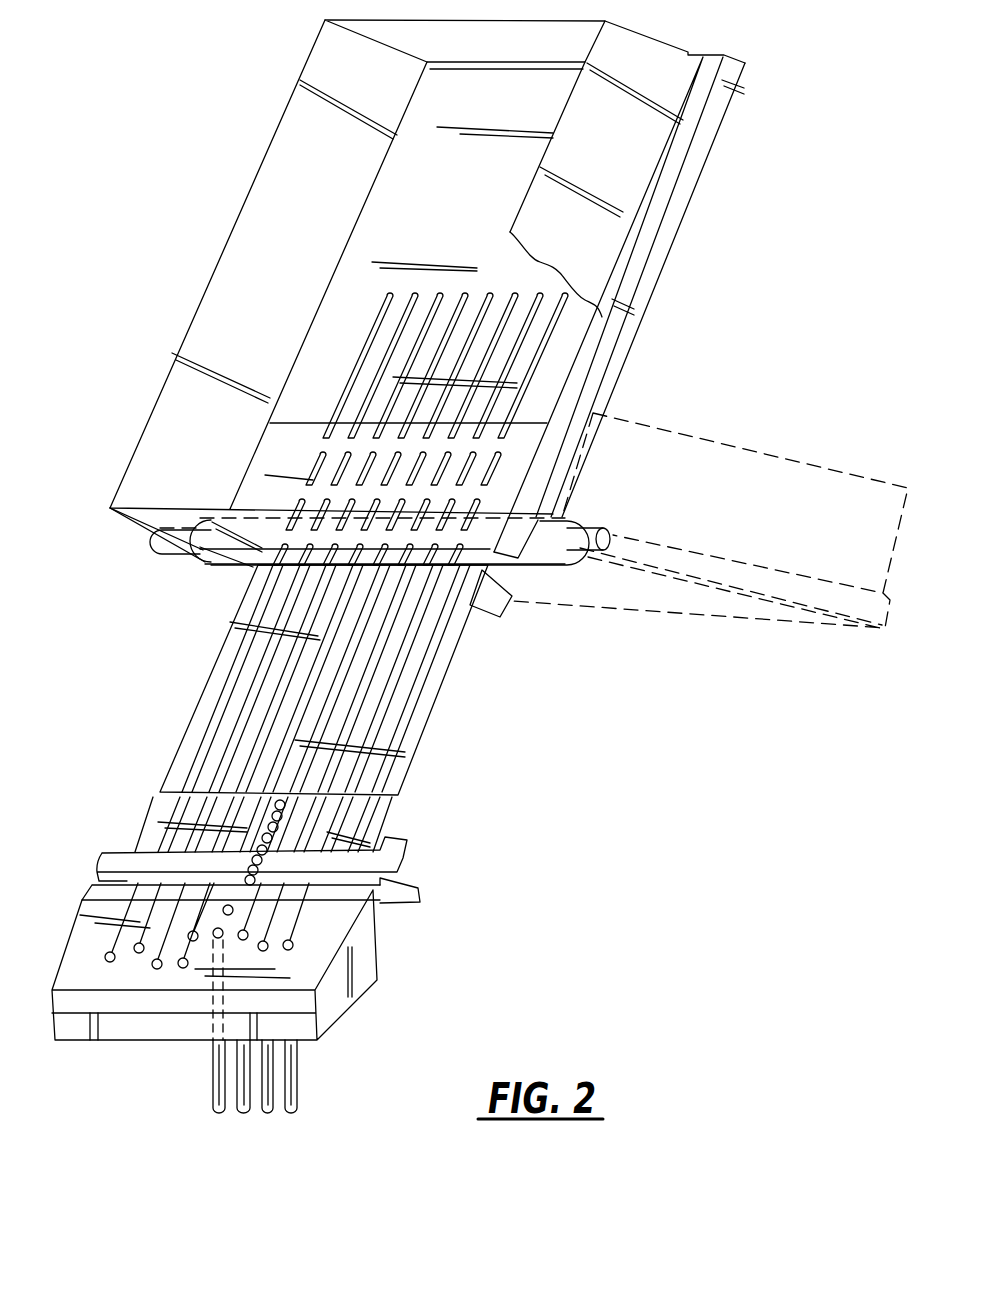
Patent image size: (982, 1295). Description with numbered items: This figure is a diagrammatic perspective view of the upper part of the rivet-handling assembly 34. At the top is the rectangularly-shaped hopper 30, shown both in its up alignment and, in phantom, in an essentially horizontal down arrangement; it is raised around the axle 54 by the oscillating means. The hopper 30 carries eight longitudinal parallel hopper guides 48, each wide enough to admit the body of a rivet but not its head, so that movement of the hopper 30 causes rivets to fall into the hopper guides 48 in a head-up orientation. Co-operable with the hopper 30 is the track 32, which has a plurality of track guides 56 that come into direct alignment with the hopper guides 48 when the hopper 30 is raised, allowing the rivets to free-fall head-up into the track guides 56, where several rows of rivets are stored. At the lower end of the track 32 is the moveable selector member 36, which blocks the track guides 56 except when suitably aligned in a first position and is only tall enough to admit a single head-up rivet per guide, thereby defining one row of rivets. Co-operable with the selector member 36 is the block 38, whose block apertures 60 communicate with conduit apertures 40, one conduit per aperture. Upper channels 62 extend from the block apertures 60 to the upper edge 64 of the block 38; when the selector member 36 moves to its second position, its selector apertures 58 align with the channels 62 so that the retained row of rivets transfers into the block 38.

The hopper 30 is at (477, 204).
The track 32 is at (437, 648).
The connector assembly 34 is at (315, 965).
The selector member 36 is at (417, 890).
The block 38 is at (320, 945).
The conduit apertures 40 is at (290, 1072).
The hopper guides 48 is at (533, 298).
The axle 54 is at (577, 543).
The track guides 56 is at (393, 705).
The selector apertures 58 is at (157, 872).
The block apertures 60 is at (106, 956).
The upper channels 62 is at (130, 912).
The upper edge 64 is at (123, 882).